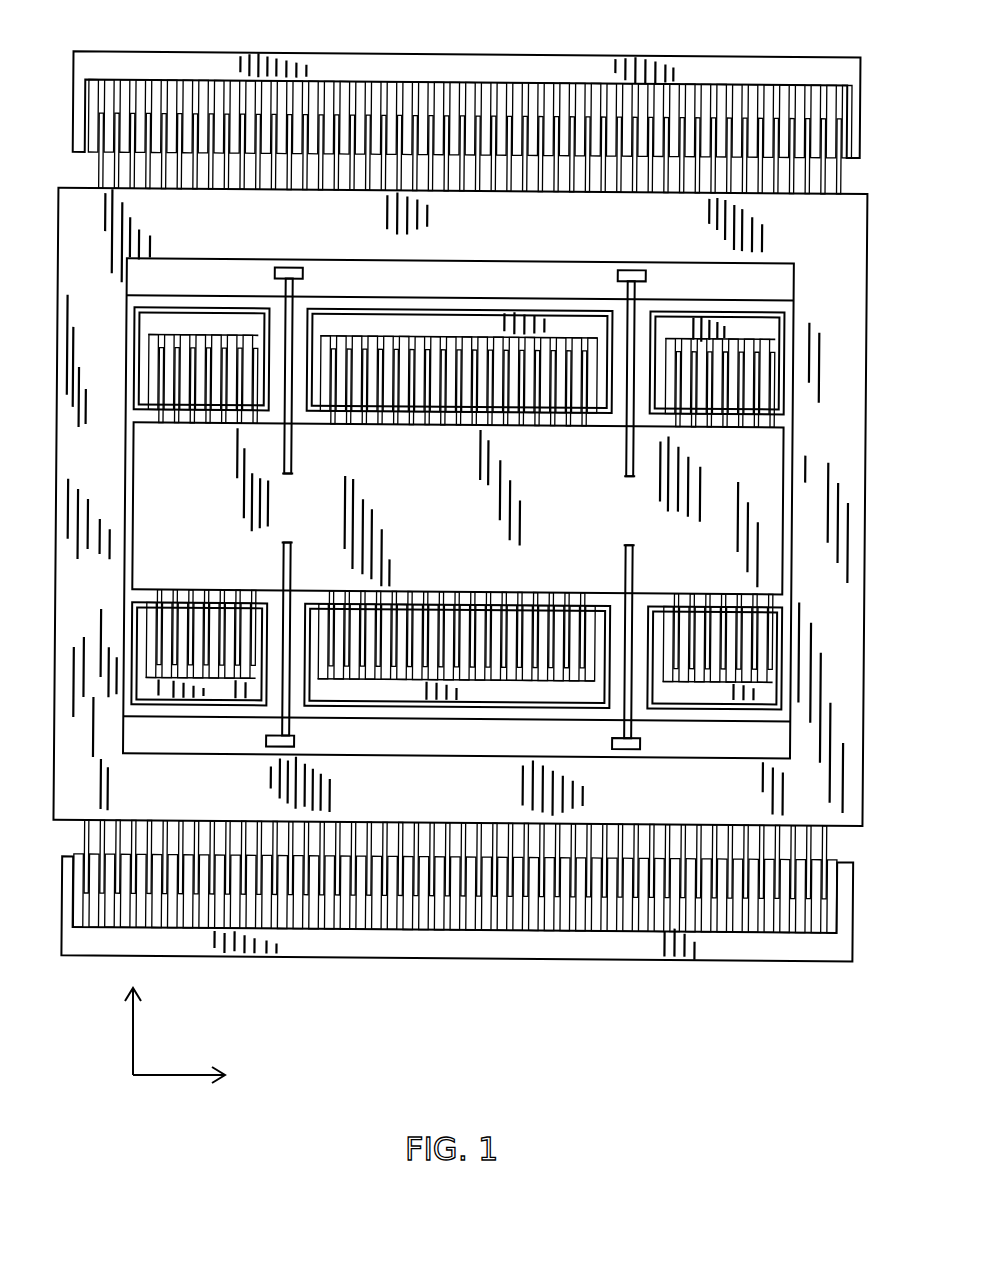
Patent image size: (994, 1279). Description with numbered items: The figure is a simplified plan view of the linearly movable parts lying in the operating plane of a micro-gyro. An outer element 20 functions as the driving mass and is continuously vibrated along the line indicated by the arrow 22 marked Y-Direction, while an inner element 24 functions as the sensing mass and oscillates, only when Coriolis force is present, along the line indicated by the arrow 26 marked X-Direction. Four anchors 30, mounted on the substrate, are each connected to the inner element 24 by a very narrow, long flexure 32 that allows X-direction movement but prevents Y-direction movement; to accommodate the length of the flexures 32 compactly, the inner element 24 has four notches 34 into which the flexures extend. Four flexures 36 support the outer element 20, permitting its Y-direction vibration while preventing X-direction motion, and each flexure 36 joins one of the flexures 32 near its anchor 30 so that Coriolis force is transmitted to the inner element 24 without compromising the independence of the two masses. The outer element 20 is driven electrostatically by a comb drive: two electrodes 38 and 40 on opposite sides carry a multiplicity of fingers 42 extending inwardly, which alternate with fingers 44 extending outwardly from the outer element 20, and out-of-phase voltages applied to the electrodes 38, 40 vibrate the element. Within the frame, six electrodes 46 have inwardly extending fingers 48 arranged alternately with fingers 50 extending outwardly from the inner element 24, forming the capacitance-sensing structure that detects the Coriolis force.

The outer element 20 is at (859, 752).
The arrow marked Y-Direction 22 is at (132, 1030).
The inner element 24 is at (709, 564).
The arrow marked X-Direction 26 is at (150, 1077).
The anchors 30 is at (289, 270).
The flexures 32 is at (297, 306).
The notches 34 is at (293, 446).
The flexures 36 is at (198, 297).
The electrode 38 is at (644, 62).
The electrode 40 is at (672, 943).
The fingers 42 is at (512, 92).
The fingers 44 is at (112, 175).
The electrodes 46 is at (217, 332).
The fingers 48 is at (415, 350).
The fingers 50 is at (760, 387).